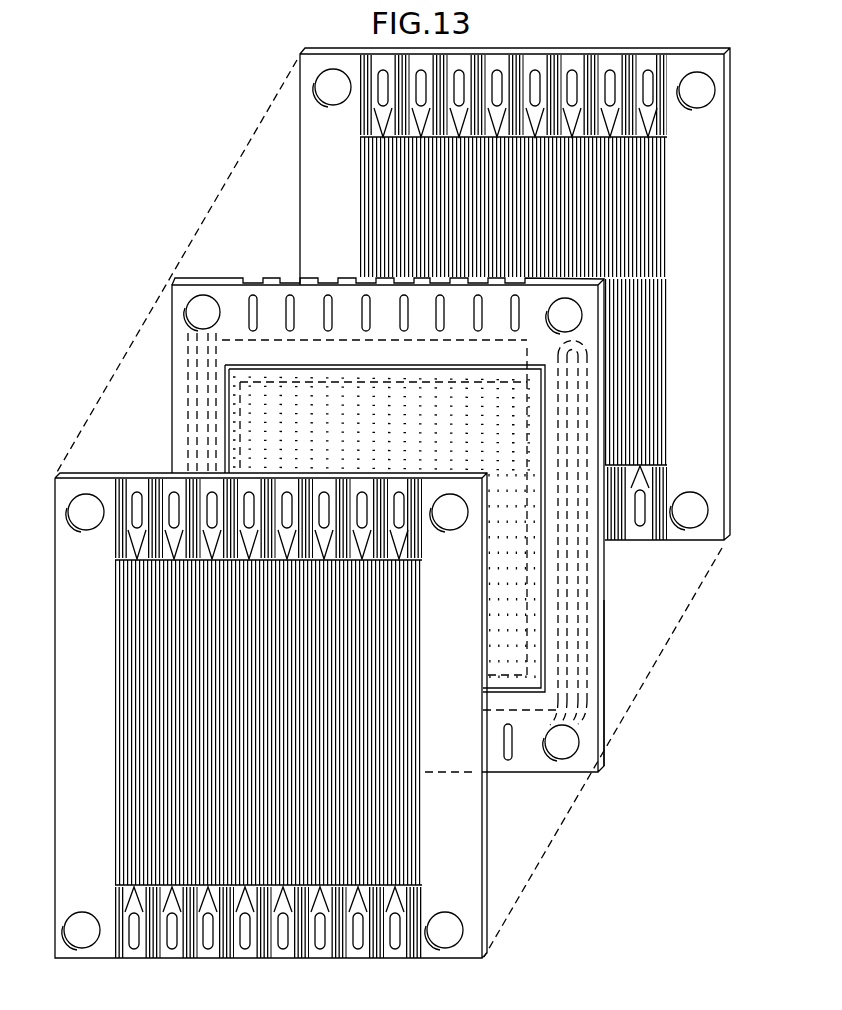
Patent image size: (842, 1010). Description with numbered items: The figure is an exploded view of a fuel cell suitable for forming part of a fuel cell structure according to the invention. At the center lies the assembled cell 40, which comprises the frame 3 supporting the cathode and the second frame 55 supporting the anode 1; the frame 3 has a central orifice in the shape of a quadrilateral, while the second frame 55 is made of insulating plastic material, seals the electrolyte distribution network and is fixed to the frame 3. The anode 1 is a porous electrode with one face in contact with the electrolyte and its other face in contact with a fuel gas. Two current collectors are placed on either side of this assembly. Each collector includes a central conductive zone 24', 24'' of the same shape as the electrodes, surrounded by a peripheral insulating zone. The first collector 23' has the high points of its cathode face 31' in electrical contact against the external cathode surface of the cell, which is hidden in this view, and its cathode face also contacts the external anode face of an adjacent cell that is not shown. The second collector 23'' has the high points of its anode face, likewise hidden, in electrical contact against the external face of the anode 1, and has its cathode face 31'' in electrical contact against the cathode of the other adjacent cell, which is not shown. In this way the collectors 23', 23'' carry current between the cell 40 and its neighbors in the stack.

The first current collector 23' is at (468, 294).
The second current collector 23'' is at (271, 685).
The cell 40 is at (212, 268).
The anode 1 is at (282, 426).
The frame 3 is at (600, 680).
The second frame 55 is at (583, 708).
The central conductive zone 24' is at (563, 321).
The central conductive zone 24'' is at (328, 767).
The cathode face 31' is at (735, 354).
The cathode face 31'' is at (488, 834).